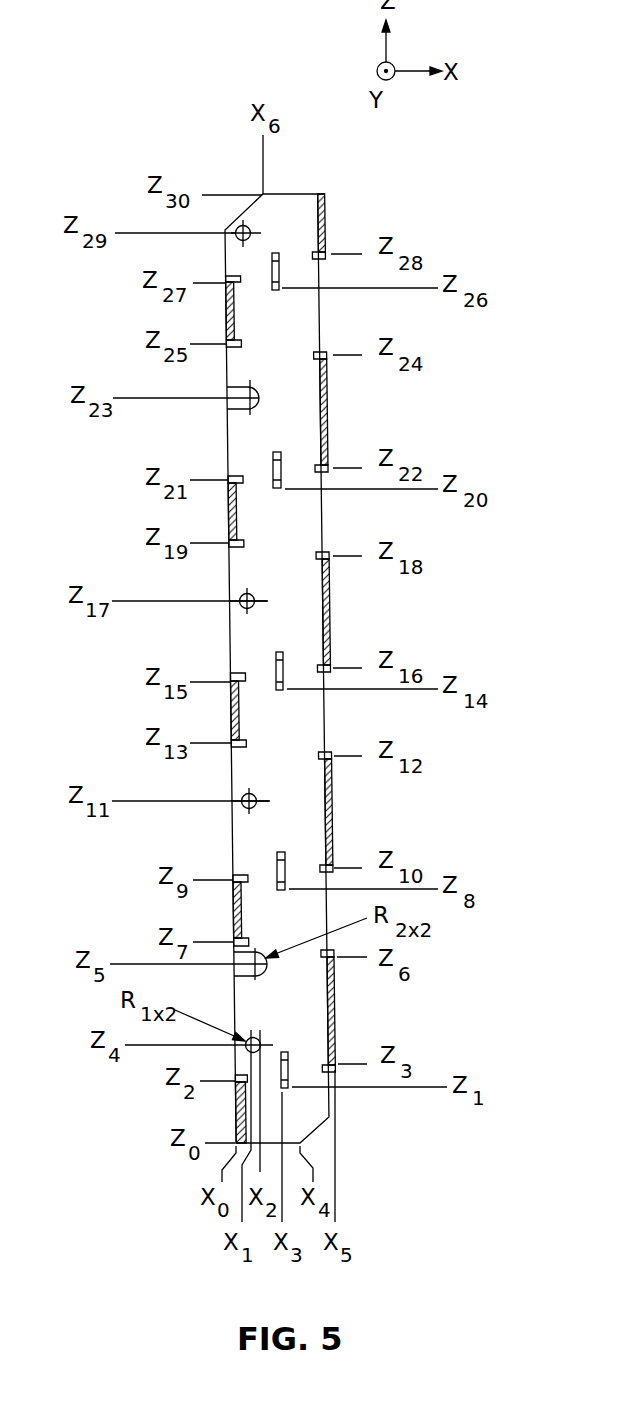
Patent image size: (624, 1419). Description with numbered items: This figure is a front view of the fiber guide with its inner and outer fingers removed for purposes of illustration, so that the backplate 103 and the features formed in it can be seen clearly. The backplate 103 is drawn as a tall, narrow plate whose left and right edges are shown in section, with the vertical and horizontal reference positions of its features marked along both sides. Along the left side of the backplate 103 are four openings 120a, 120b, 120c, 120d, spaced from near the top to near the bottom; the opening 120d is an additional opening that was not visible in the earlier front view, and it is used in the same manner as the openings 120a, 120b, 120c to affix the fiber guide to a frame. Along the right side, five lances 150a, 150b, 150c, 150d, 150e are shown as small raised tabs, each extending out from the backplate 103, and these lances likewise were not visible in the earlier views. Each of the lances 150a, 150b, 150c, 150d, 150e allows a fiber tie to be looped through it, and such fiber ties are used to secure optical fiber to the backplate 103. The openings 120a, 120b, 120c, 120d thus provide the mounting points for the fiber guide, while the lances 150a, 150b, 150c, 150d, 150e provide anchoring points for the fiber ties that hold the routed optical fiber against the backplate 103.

The backplate 103 is at (287, 208).
The lance 150a is at (282, 268).
The lance 150b is at (283, 468).
The lance 150c is at (284, 668).
The lance 150d is at (285, 868).
The lance 150e is at (289, 1058).
The opening 120a is at (236, 236).
The opening 120b is at (240, 605).
The opening 120c is at (242, 805).
The opening 120d is at (246, 1050).